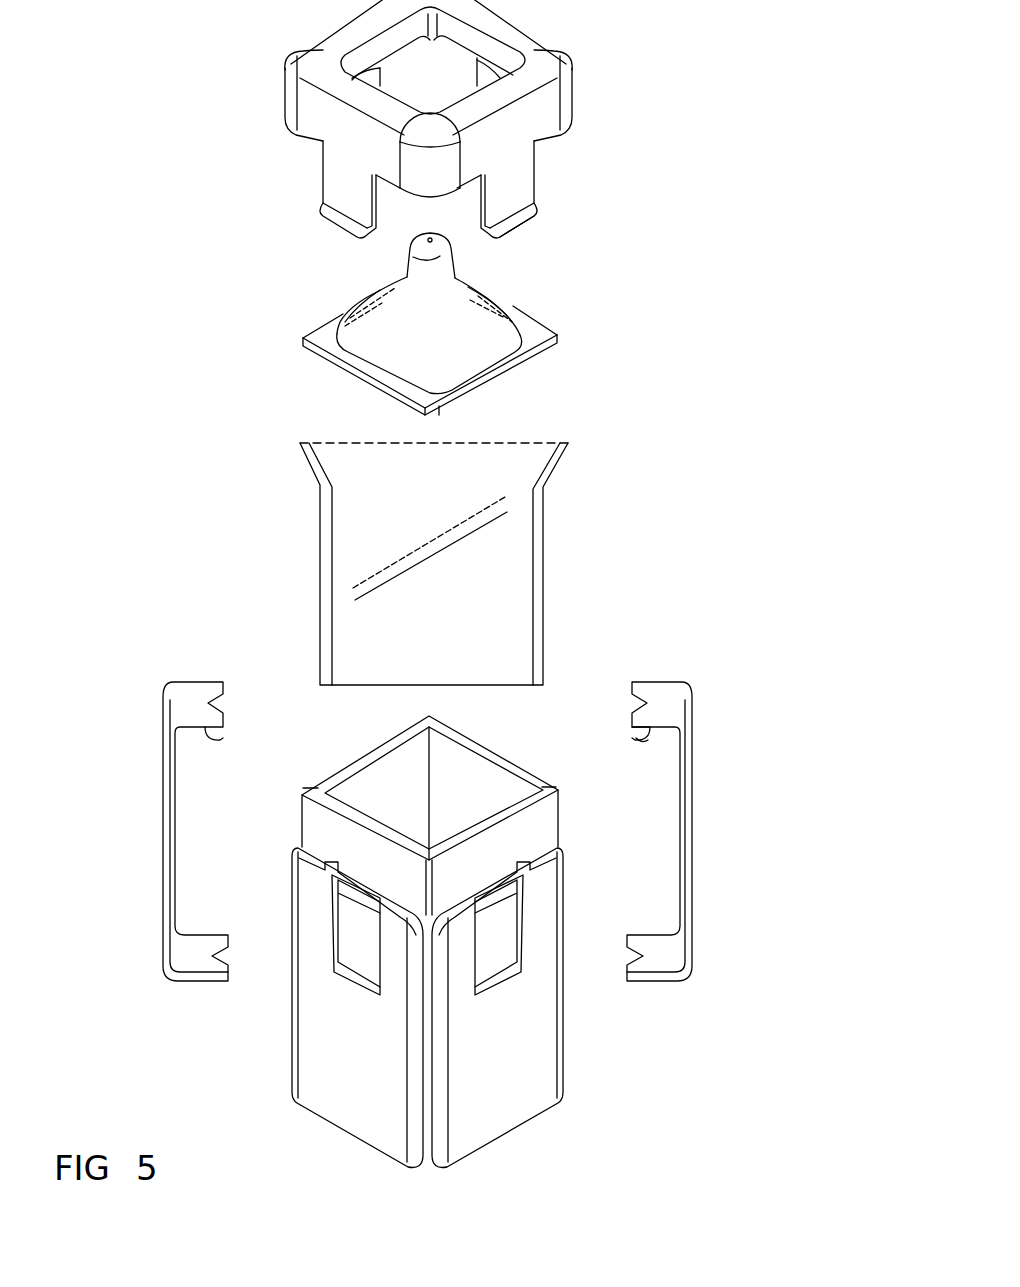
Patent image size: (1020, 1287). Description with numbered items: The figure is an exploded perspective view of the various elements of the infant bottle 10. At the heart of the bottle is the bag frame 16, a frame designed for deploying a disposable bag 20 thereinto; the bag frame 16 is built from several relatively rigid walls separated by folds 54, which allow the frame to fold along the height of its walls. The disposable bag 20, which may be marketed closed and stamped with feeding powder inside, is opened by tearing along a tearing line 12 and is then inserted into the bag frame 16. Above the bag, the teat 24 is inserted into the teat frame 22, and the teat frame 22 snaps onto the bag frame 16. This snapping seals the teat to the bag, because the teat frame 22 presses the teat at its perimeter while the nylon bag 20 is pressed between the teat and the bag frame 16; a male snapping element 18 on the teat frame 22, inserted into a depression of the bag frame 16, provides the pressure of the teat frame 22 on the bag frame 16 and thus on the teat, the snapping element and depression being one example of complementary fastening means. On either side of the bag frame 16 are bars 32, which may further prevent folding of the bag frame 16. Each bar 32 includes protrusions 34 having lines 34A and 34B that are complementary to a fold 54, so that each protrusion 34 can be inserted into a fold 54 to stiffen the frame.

The infant bottle 10 is at (654, 112).
The tearing line 12 is at (345, 442).
The bag frame 16 is at (278, 1062).
The male snapping element 18 is at (536, 227).
The disposable bag 20 is at (345, 546).
The teat frame 22 is at (277, 60).
The teat 24 is at (306, 334).
The bar 32 is at (702, 832).
The protrusion 34 is at (510, 792).
The line 34A is at (643, 741).
The line 34B is at (208, 739).
The fold 54 is at (328, 790).